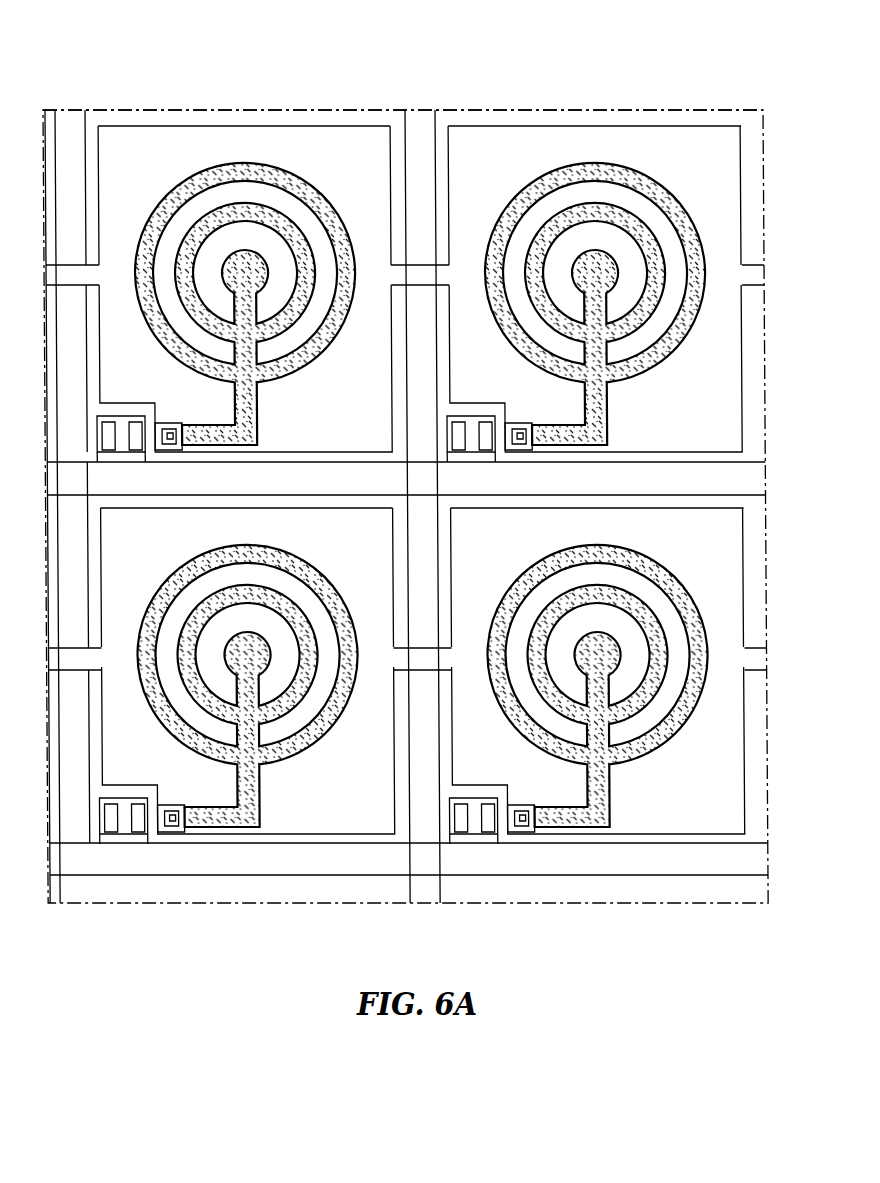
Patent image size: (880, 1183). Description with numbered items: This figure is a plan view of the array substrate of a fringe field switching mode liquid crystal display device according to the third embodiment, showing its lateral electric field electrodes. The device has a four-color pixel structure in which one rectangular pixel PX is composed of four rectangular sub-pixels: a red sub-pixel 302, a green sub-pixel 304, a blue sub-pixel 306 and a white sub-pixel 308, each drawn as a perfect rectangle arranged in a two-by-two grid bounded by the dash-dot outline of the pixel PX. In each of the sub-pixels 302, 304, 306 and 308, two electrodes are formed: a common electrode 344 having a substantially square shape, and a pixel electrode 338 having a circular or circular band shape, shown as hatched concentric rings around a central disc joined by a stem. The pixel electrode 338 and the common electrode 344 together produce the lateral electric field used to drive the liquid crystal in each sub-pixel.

The red sub-pixel 302 is at (110, 118).
The green sub-pixel 304 is at (577, 120).
The blue sub-pixel 306 is at (592, 838).
The white sub-pixel 308 is at (250, 840).
The pixel electrode 338 is at (257, 265).
The common electrode 344 is at (327, 125).
The pixel PX is at (465, 110).